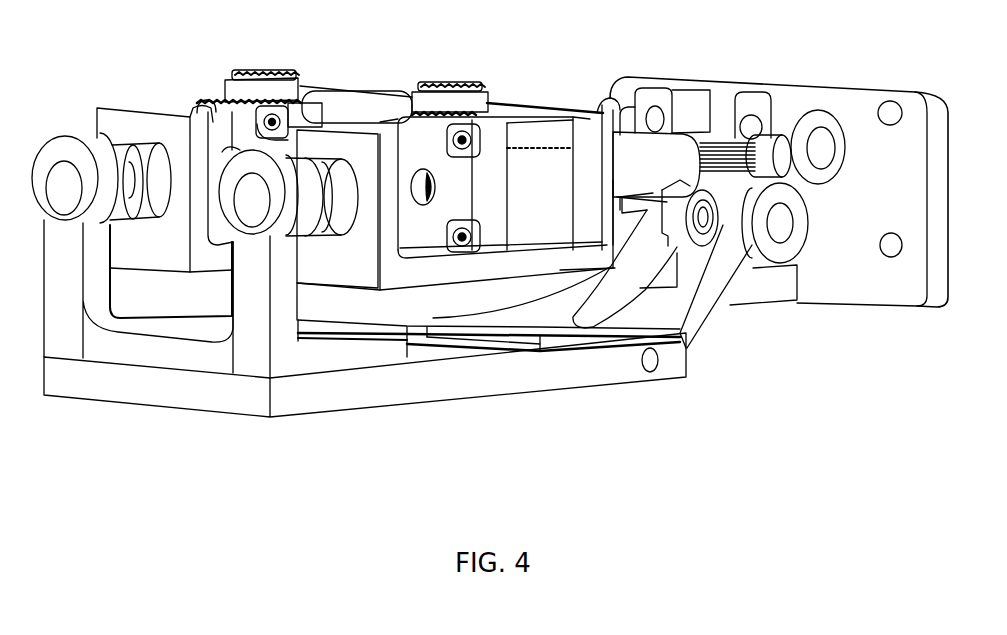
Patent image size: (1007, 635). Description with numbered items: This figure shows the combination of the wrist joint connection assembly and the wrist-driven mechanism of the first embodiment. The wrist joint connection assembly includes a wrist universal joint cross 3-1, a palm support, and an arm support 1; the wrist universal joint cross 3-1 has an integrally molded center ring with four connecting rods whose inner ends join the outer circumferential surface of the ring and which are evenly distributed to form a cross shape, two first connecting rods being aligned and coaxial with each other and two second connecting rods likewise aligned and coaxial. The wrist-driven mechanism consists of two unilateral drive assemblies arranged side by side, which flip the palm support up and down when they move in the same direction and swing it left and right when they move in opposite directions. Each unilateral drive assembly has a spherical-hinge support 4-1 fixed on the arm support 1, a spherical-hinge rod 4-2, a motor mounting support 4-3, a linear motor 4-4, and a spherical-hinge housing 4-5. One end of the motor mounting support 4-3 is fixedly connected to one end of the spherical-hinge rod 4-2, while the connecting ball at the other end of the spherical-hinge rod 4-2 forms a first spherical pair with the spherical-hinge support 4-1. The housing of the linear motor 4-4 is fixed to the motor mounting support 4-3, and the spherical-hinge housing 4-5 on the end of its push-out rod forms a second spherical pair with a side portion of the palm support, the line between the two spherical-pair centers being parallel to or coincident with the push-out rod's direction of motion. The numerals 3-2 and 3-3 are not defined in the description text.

The arm support 1 is at (587, 370).
The wrist universal joint cross 3-1 is at (797, 300).
The bearing block 3-2 is at (737, 96).
The lever 3-3 is at (737, 277).
The spherical-hinge support 4-1 is at (252, 237).
The spherical-hinge rod 4-2 is at (323, 195).
The motor mounting support 4-3 is at (470, 267).
The linear motor 4-4 is at (537, 193).
The spherical-hinge housing 4-5 is at (790, 133).